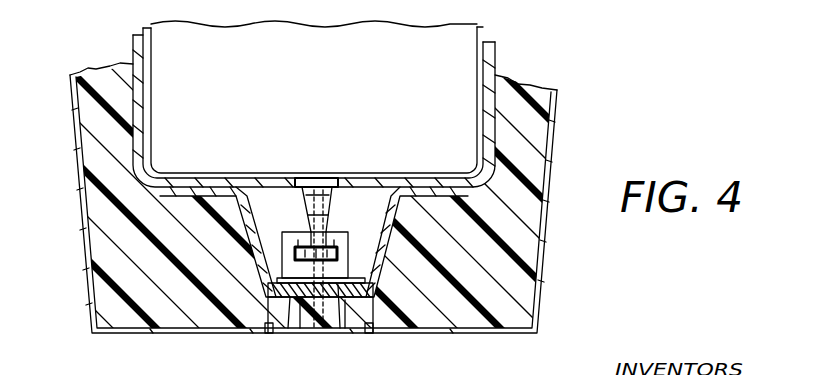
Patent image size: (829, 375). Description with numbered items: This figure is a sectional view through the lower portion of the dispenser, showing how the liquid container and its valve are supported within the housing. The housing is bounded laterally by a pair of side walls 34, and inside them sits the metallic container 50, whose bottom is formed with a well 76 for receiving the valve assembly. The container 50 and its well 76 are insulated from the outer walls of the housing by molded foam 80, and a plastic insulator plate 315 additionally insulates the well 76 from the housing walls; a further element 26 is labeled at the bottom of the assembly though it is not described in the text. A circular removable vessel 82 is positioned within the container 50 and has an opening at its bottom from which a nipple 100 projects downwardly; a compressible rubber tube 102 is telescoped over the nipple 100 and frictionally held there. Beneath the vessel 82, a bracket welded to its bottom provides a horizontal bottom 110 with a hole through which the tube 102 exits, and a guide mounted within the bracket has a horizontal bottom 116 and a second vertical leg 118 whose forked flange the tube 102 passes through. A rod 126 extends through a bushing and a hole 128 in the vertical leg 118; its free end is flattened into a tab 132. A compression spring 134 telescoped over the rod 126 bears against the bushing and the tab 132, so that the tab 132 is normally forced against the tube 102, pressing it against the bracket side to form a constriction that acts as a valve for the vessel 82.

The side walls 34 is at (77, 157).
The metallic container 50 is at (492, 60).
The removable vessel 82 is at (477, 70).
The foam 80 is at (527, 242).
The well 76 is at (394, 212).
The compressible tube 102 is at (348, 187).
The nipple 100 is at (326, 183).
The second vertical leg 118 is at (320, 235).
The rod 126 is at (368, 229).
The hole 128 is at (295, 255).
The tab 132 is at (309, 249).
The compression spring 134 is at (317, 233).
The horizontal bottom 110 is at (367, 282).
The base 26 is at (347, 308).
The plastic insulator plate 315 is at (290, 297).
The horizontal bottom 116 is at (338, 285).